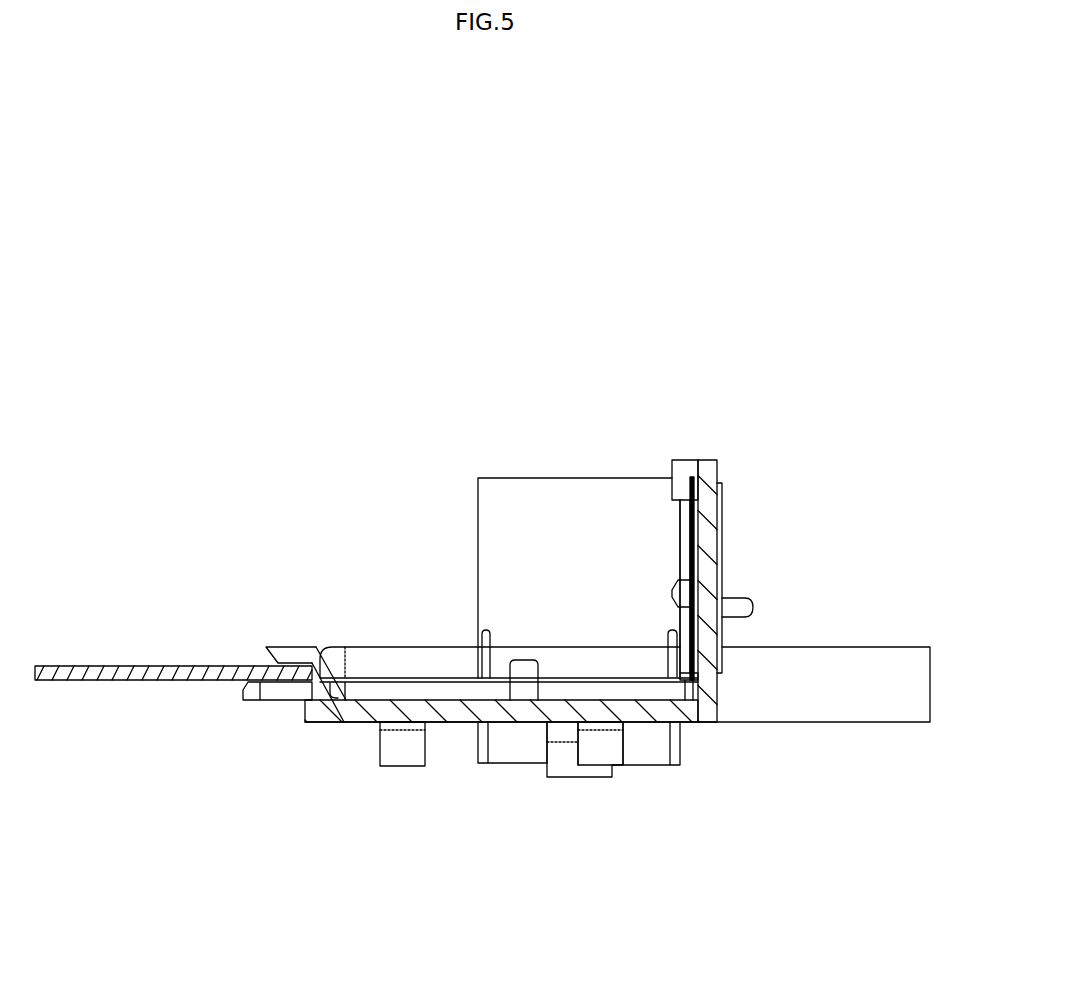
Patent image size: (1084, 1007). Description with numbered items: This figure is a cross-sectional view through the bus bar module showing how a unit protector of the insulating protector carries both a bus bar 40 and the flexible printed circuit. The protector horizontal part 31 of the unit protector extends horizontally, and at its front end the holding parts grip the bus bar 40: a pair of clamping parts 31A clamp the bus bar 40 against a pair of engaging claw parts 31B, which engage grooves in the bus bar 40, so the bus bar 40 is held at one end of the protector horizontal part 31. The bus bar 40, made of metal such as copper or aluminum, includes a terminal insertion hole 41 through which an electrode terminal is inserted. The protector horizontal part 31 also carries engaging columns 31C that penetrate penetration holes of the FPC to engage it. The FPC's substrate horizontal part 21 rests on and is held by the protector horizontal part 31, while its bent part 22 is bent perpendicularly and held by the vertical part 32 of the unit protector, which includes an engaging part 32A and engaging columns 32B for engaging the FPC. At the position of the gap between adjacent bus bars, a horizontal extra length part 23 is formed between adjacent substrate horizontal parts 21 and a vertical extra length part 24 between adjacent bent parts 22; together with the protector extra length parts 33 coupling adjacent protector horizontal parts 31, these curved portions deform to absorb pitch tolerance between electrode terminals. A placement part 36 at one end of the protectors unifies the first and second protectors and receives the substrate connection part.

The bus bar 40 is at (60, 666).
The terminal insertion hole 41 is at (86, 677).
The protector horizontal part 31 is at (347, 713).
The clamping part 31A is at (280, 648).
The engaging claw part 31B is at (275, 692).
The engaging column 31C is at (525, 660).
The placement part 36 is at (348, 652).
The substrate horizontal part 21 is at (403, 680).
The bent part 22 is at (681, 533).
The horizontal extra length part 23 is at (652, 690).
The vertical extra length part 24 is at (722, 513).
The vertical part 32 is at (717, 473).
The engaging part 32A is at (685, 465).
The engaging column 32B is at (672, 590).
The protector extra length part 33 is at (598, 758).